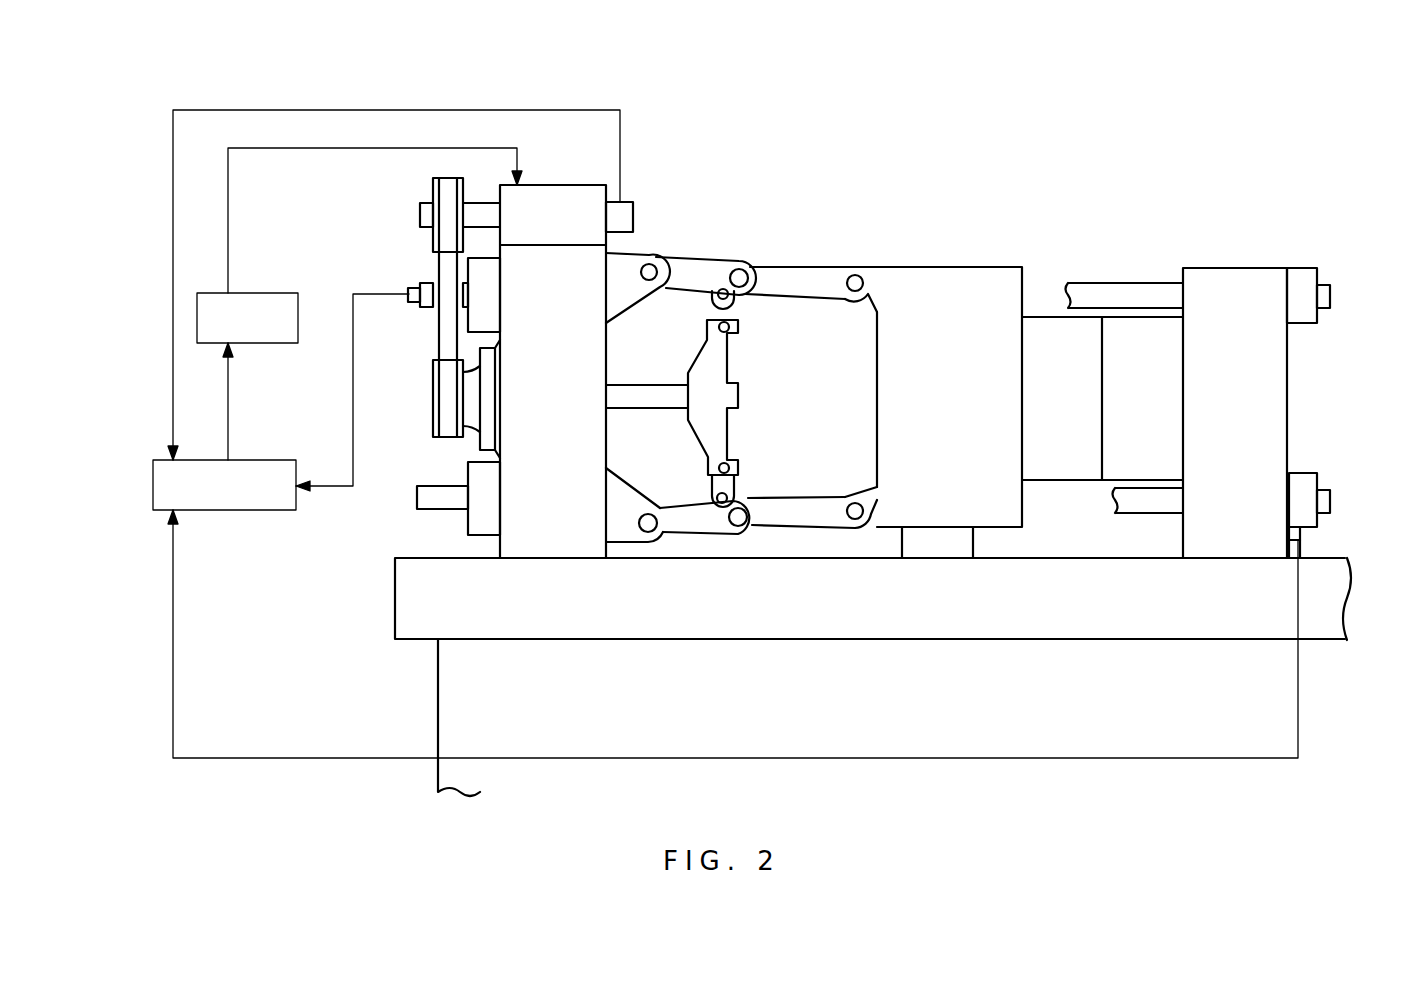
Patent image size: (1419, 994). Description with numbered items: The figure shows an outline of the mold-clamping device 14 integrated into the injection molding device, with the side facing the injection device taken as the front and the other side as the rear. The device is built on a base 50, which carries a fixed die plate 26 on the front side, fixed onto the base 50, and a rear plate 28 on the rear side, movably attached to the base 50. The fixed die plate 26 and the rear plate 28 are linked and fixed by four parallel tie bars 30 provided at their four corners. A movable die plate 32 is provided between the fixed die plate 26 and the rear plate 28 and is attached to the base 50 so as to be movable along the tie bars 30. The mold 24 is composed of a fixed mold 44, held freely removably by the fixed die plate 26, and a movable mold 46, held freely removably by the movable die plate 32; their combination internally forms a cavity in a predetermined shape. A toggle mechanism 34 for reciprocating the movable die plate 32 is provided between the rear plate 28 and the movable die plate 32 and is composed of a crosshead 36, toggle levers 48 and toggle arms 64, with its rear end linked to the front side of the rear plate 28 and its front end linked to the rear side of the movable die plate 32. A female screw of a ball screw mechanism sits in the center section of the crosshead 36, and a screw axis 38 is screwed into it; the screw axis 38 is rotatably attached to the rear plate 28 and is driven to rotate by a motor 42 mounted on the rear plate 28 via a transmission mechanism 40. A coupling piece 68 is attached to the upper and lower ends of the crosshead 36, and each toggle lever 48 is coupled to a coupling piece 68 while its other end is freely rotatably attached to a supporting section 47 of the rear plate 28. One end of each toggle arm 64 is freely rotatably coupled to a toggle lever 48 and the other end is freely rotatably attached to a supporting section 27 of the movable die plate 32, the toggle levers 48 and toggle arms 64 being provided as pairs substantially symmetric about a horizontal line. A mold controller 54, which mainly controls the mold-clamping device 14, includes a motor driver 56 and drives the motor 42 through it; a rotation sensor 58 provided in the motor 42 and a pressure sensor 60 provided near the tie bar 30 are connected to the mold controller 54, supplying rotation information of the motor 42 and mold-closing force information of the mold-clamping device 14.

The mold-clamping device 14 is at (1105, 125).
The mold 24 is at (1172, 236).
The fixed die plate 26 is at (1251, 272).
The supporting section 27 is at (870, 275).
The rear plate 28 is at (515, 452).
The tie bar 30 is at (1085, 285).
The movable die plate 32 is at (958, 278).
The toggle mechanism 34 is at (785, 230).
The crosshead 36 is at (722, 360).
The screw axis 38 is at (645, 405).
The transmission mechanism 40 is at (376, 242).
The motor 42 is at (554, 196).
The fixed mold 44 is at (1148, 325).
The movable mold 46 is at (1092, 325).
The supporting section 47 is at (628, 255).
The toggle lever 48 is at (700, 262).
The base 50 is at (450, 715).
The mold controller 54 is at (270, 505).
The motor driver 56 is at (278, 343).
The rotation sensor 58 is at (627, 202).
The pressure sensor 60 is at (1300, 540).
The toggle arm 64 is at (820, 280).
The coupling piece 68 is at (740, 318).